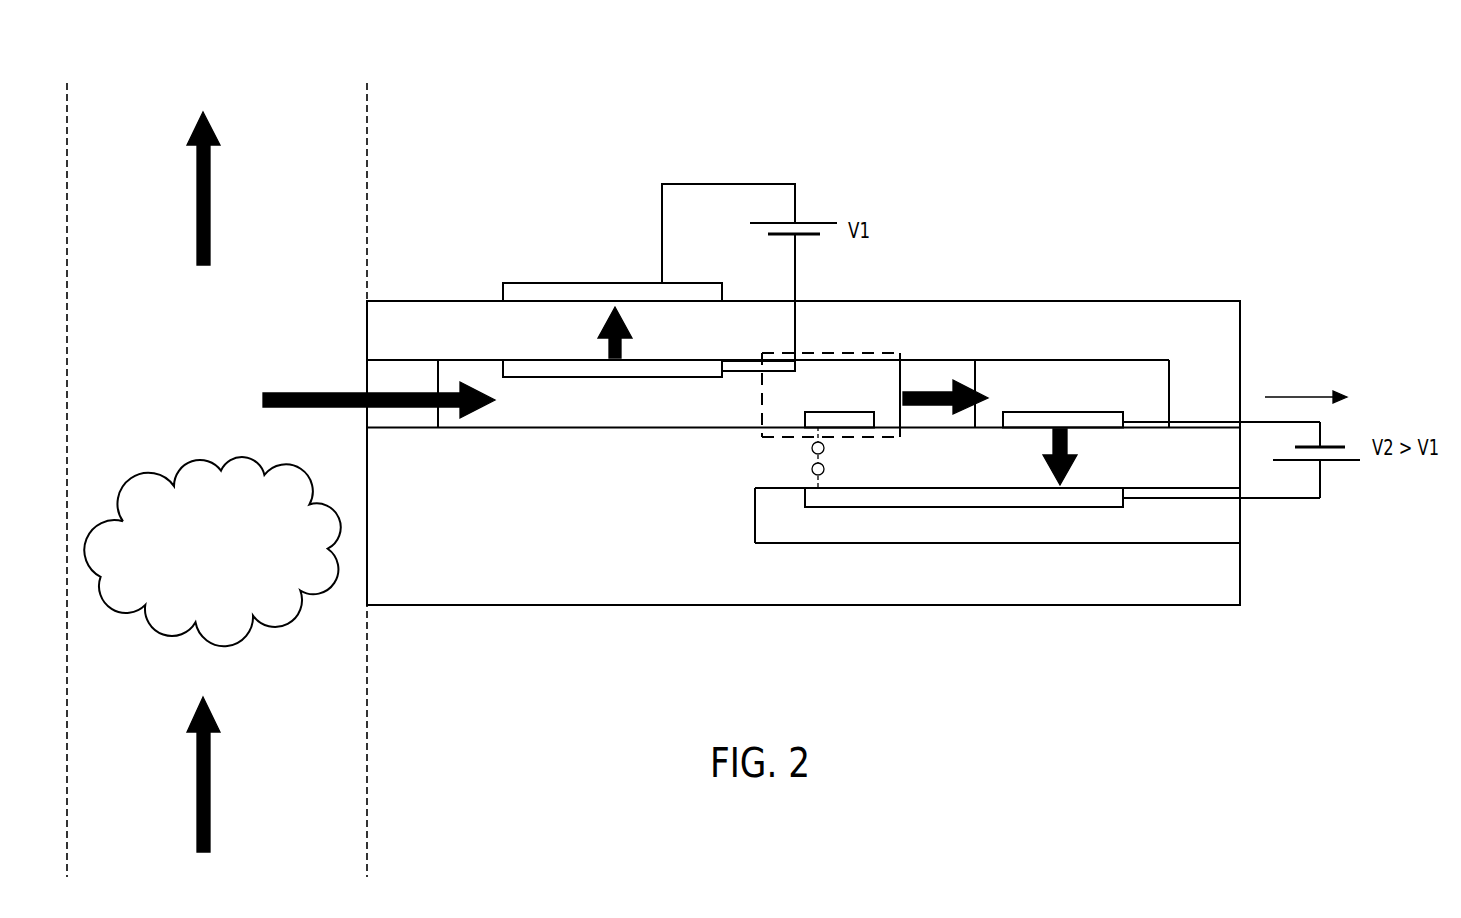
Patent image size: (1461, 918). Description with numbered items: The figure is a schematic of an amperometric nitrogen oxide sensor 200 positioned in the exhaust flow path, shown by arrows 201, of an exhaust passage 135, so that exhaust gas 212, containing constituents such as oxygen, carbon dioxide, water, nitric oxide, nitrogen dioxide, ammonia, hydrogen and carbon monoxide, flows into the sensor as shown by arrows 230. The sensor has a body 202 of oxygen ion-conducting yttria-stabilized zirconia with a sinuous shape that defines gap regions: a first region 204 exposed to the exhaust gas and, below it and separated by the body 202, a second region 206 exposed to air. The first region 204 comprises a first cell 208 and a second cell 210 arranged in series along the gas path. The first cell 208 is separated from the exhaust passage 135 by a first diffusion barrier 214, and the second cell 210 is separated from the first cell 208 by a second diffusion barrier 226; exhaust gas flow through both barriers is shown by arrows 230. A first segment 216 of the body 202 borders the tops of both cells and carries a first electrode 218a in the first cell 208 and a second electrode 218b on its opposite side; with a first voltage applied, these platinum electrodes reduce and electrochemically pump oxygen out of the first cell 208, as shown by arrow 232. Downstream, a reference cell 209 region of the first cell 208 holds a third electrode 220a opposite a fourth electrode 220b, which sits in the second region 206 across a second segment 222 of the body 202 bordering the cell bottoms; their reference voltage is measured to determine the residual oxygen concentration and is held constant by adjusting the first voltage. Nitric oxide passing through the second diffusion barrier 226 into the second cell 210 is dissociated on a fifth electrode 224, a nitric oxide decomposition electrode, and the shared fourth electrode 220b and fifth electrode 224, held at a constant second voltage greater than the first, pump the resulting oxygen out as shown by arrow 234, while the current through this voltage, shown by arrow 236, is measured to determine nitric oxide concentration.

The amperometric NOx sensor 200 is at (1198, 74).
The arrows (exhaust flow path) 201 is at (197, 228).
The exhaust passage 135 is at (369, 160).
The body 202 is at (1100, 300).
The first region 204 is at (268, 338).
The second region 206 is at (972, 537).
The first cell 208 is at (660, 409).
The reference cell 209 is at (762, 437).
The second cell 210 is at (1040, 409).
The exhaust gas 212 is at (205, 466).
The first diffusion barrier 214 is at (367, 362).
The first segment 216 is at (462, 347).
The first electrode 218a is at (600, 378).
The second electrode 218b is at (600, 283).
The third electrode 220a is at (812, 412).
The fourth electrode 220b is at (1060, 507).
The second segment 222 is at (985, 467).
The fifth electrode 224 is at (1060, 412).
The second diffusion barrier 226 is at (922, 361).
The arrows (exhaust gas flow) 230 is at (313, 392).
The arrow (oxygen pumping from first cell) 232 is at (602, 330).
The arrow (oxygen pumping from second cell) 234 is at (1075, 465).
The arrow (current I2) 236 is at (1340, 391).